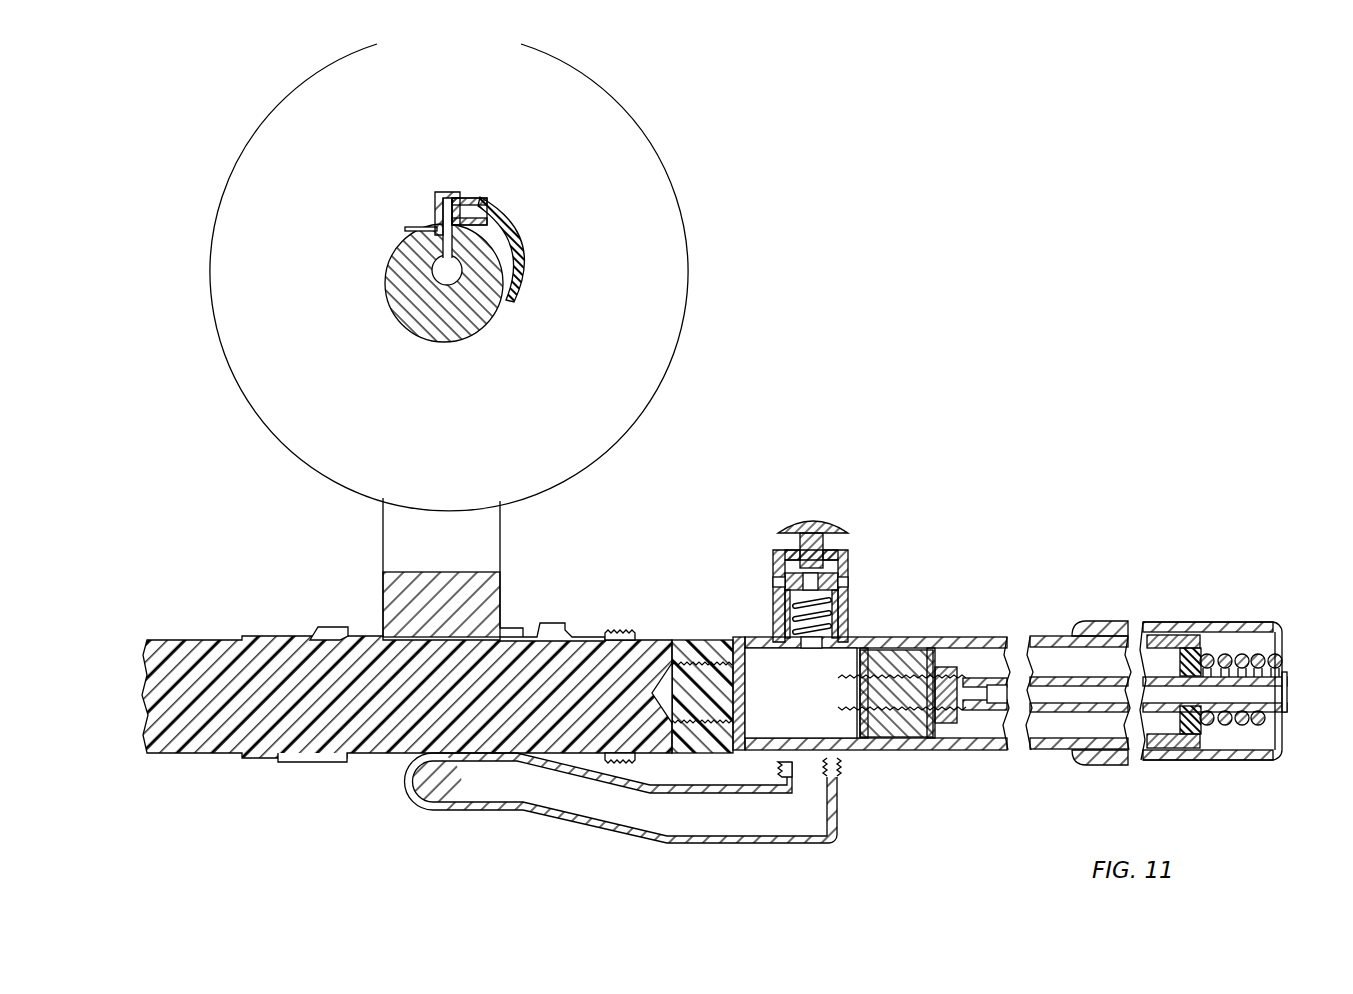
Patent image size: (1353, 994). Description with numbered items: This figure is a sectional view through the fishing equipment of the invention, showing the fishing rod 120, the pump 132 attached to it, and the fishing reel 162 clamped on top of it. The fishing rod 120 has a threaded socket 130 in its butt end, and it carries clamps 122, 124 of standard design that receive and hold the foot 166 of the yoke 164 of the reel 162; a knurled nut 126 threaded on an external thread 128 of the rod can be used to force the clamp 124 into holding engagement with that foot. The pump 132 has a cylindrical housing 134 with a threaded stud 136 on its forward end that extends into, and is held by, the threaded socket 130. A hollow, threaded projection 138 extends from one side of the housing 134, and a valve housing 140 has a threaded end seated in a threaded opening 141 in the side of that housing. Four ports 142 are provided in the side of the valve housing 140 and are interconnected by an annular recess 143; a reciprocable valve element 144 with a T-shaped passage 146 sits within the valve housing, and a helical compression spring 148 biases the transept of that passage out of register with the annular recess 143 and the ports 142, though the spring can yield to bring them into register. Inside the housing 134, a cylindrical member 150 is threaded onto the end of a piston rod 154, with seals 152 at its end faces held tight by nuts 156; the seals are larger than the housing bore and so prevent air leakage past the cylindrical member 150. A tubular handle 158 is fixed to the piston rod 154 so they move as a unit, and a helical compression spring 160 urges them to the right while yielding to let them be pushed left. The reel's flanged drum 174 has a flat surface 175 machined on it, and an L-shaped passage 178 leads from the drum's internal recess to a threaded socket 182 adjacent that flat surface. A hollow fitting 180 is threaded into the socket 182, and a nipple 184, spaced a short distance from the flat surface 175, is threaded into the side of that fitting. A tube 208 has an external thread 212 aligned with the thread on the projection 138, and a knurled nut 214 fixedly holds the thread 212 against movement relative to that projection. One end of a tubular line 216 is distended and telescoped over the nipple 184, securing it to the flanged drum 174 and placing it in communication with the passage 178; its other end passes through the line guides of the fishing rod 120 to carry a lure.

The fishing rod 120 is at (208, 745).
The clamp 122 is at (340, 627).
The clamp 124 is at (557, 622).
The knurled nut 126 is at (622, 631).
The external thread 128 is at (643, 639).
The threaded socket 130 is at (698, 666).
The pump 132 is at (1013, 603).
The cylindrical housing 134 is at (1057, 752).
The threaded stud 136 is at (705, 712).
The hollow threaded projection 138 is at (787, 755).
The valve housing 140 is at (848, 558).
The threaded opening 141 is at (778, 638).
The ports 142 is at (777, 578).
The annular recess 143 is at (827, 578).
The reciprocable valve element 144 is at (827, 543).
The T-shaped passage 146 is at (800, 560).
The helical compression spring 148 is at (823, 613).
The cylindrical member 150 is at (903, 727).
The seals 152 is at (935, 658).
The piston rod 154 is at (1047, 678).
The nuts 156 is at (840, 672).
The handle 158 is at (1150, 622).
The helical compression spring 160 is at (1242, 657).
The fishing reel 162 is at (705, 272).
The yoke 164 is at (500, 538).
The foot 166 is at (513, 632).
The flanged drum 174 is at (645, 175).
The flat surface 175 is at (440, 235).
The L-shaped passage 178 is at (442, 277).
The hollow fitting 180 is at (443, 190).
The threaded socket 182 is at (435, 229).
The nipple 184 is at (480, 200).
The tube 208 is at (703, 843).
The external thread 212 is at (840, 780).
The knurled nut 214 is at (842, 770).
The tubular line 216 is at (522, 233).